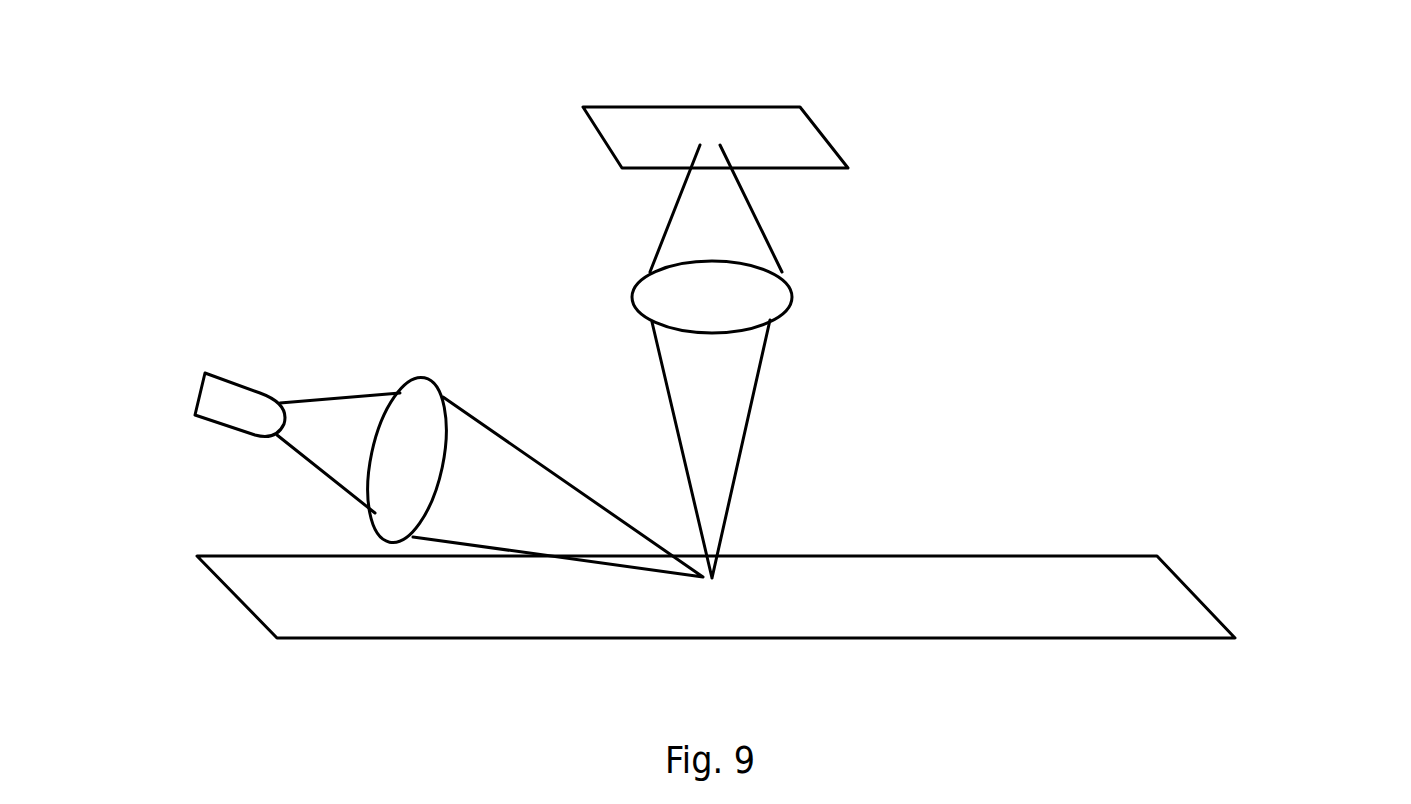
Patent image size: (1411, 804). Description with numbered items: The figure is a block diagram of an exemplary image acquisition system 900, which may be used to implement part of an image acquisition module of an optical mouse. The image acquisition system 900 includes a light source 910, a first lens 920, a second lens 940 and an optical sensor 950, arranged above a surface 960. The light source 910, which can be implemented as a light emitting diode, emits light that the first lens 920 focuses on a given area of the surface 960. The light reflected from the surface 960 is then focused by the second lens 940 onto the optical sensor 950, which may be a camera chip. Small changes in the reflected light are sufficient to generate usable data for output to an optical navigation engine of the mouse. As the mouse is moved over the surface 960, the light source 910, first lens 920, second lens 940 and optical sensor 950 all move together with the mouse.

The image acquisition system 900 is at (115, 86).
The light source 910 is at (240, 405).
The first lens 920 is at (425, 417).
The second lens 940 is at (760, 298).
The optical sensor 950 is at (793, 133).
The surface 960 is at (1118, 603).